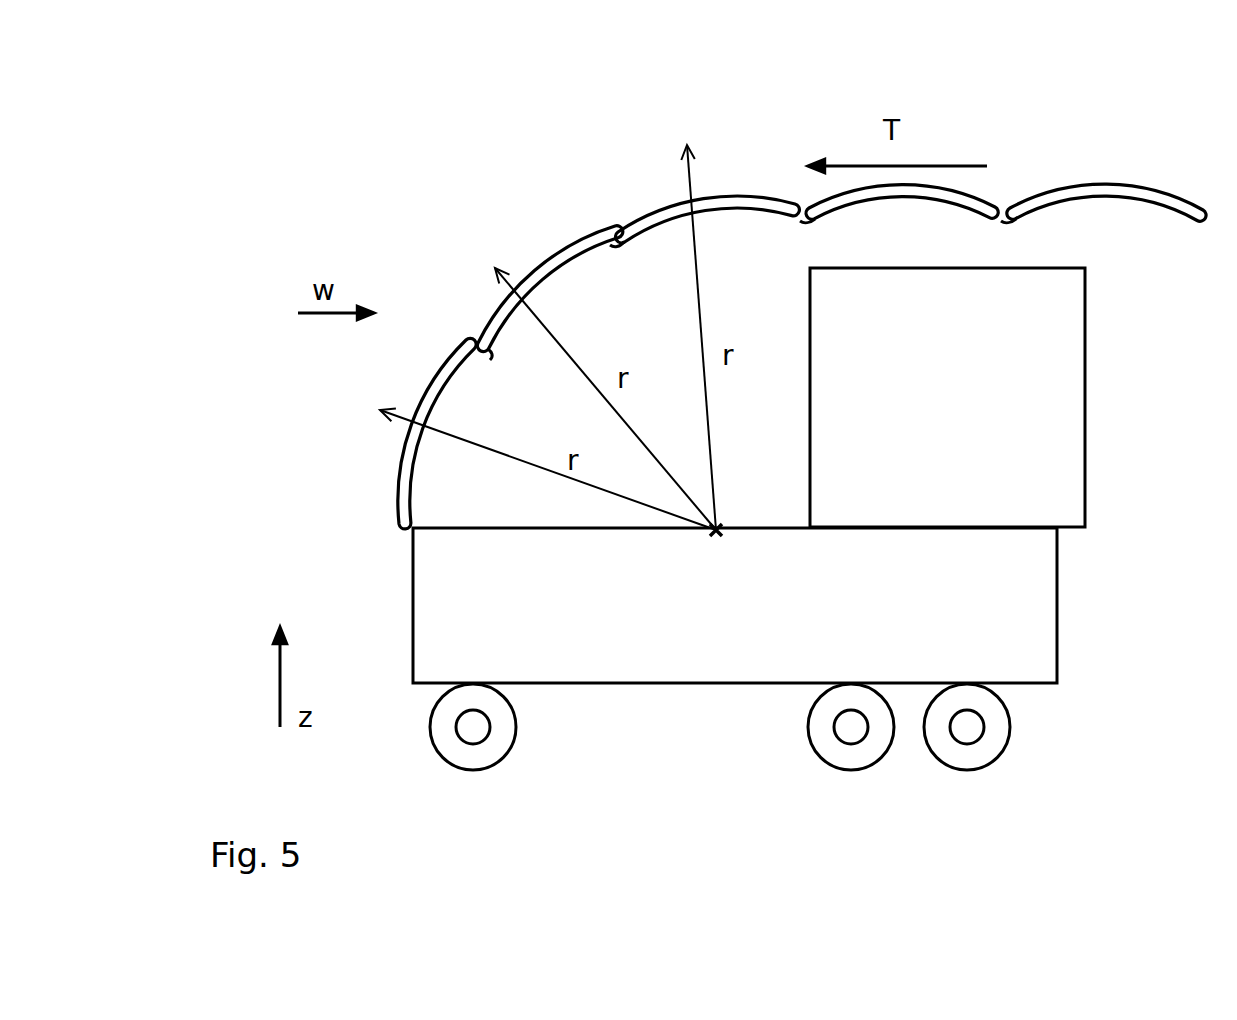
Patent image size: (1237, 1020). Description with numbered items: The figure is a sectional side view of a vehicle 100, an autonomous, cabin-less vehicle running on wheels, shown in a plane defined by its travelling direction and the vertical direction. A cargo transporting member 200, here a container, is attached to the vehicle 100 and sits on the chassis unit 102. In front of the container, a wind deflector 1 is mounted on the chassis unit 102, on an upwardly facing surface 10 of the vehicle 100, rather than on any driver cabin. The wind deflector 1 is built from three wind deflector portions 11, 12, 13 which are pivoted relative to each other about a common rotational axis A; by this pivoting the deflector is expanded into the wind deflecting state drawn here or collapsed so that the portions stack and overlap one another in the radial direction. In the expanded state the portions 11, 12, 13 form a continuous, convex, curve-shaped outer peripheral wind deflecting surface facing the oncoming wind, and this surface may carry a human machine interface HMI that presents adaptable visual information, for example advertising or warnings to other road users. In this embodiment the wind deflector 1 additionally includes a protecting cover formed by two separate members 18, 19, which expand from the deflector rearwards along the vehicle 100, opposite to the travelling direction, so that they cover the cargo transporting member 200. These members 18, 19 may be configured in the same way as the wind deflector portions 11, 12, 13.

The wind deflector 1 is at (447, 285).
The upwardly facing surface 10 is at (757, 478).
The wind deflector portion 11 is at (403, 468).
The wind deflector portion 12 is at (567, 257).
The wind deflector portion 13 is at (660, 217).
The additional protecting cover member 18 is at (987, 197).
The additional protecting cover member 19 is at (1110, 180).
The vehicle 100 is at (656, 722).
The chassis unit 102 is at (1030, 665).
The cargo transporting member 200 is at (1053, 388).
The common rotational axis A is at (716, 540).
The human machine interface HMI is at (440, 322).